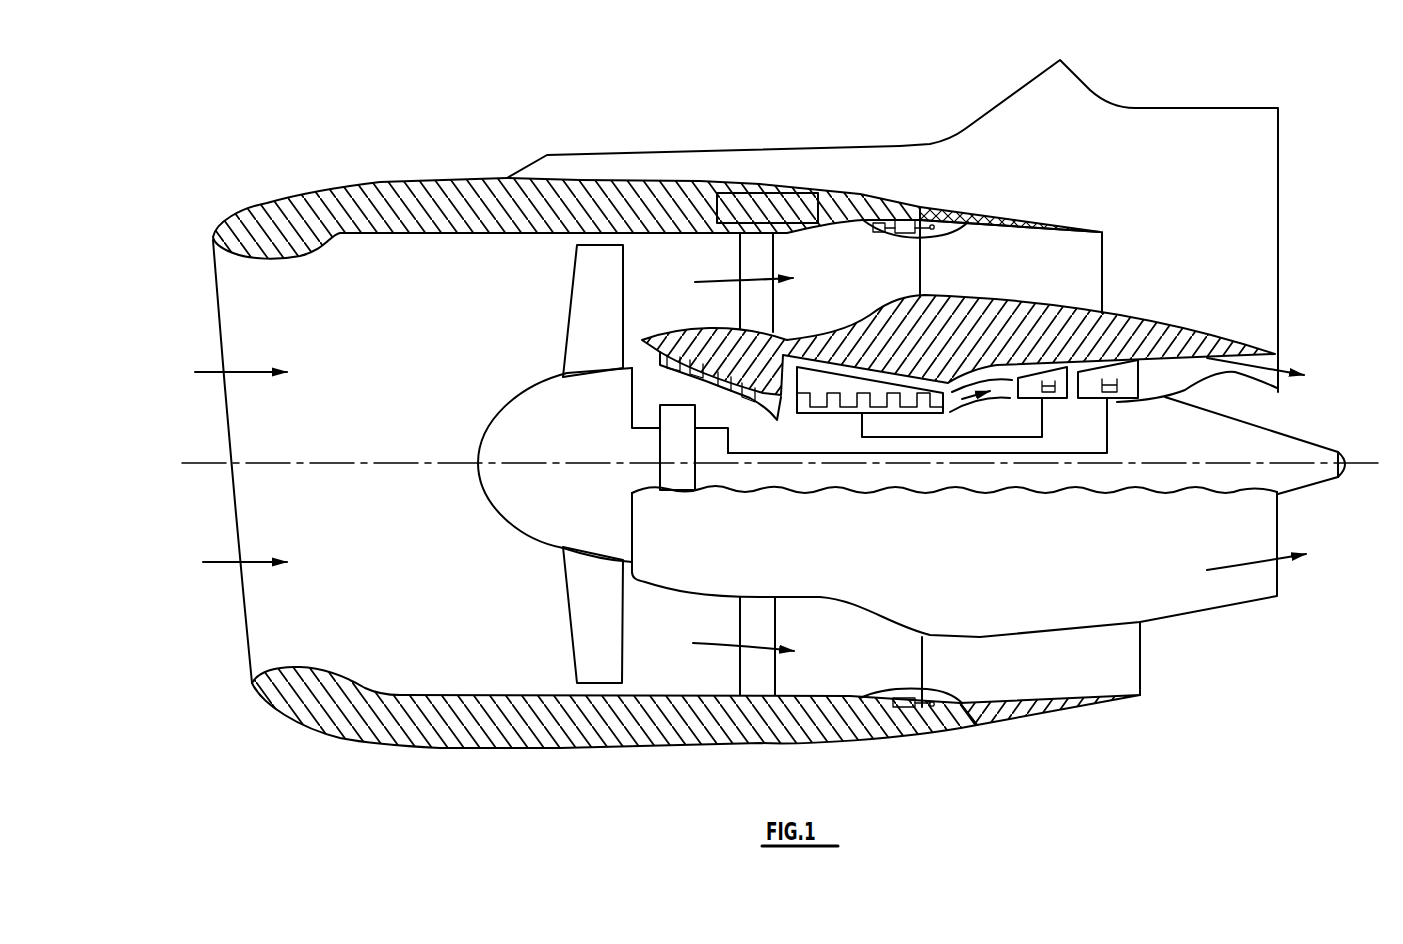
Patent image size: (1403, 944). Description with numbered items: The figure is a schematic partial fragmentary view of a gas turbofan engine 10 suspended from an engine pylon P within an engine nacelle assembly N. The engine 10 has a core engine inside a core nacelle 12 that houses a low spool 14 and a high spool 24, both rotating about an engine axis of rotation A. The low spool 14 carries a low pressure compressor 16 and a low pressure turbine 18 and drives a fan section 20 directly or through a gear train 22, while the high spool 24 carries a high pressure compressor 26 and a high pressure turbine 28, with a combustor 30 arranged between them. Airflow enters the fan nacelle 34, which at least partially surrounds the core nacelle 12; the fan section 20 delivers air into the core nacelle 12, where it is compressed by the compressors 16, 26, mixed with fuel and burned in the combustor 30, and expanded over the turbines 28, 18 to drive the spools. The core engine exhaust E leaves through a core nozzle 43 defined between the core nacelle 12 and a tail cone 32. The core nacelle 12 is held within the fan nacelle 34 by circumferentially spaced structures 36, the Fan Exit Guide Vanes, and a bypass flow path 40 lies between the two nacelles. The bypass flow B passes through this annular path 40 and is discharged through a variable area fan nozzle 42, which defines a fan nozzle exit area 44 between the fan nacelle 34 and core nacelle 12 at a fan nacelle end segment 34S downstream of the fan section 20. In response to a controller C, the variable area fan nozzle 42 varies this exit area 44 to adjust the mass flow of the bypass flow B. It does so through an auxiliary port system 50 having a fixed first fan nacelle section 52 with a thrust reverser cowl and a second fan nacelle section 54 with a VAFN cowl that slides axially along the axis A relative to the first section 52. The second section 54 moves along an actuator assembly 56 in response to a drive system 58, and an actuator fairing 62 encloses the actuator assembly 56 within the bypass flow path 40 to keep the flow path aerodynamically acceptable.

The gas turbofan engine 10 is at (419, 128).
The core nacelle 12 is at (1126, 314).
The low spool 14 is at (923, 462).
The low pressure compressor 16 is at (757, 404).
The low pressure turbine 18 is at (1145, 490).
The fan section 20 is at (561, 615).
The gear train 22 is at (675, 464).
The high spool 24 is at (896, 445).
The high pressure compressor 26 is at (835, 408).
The high pressure turbine 28 is at (1063, 400).
The combustor 30 is at (995, 404).
The tail cone 32 is at (1278, 437).
The fan nacelle 34 is at (671, 188).
The fan nacelle end segment 34S is at (1080, 230).
The circumferentially spaced structures 36 is at (766, 310).
The bypass flow path 40 is at (683, 274).
The variable area fan nozzle 42 is at (964, 709).
The core nozzle 43 is at (1279, 361).
The fan nozzle exit area 44 is at (1082, 273).
The auxiliary port system 50 is at (947, 206).
The first fan nacelle section 52 is at (862, 181).
The second fan nacelle section 54 is at (1017, 203).
The actuator assembly 56 is at (905, 234).
The drive system 58 is at (878, 233).
The actuator fairing 62 is at (955, 236).
The engine axis of rotation A is at (1375, 465).
The bypass flow B is at (723, 643).
The controller C is at (753, 184).
The core engine exhaust E is at (1256, 562).
The engine nacelle assembly N is at (725, 112).
The engine pylon P is at (1260, 173).